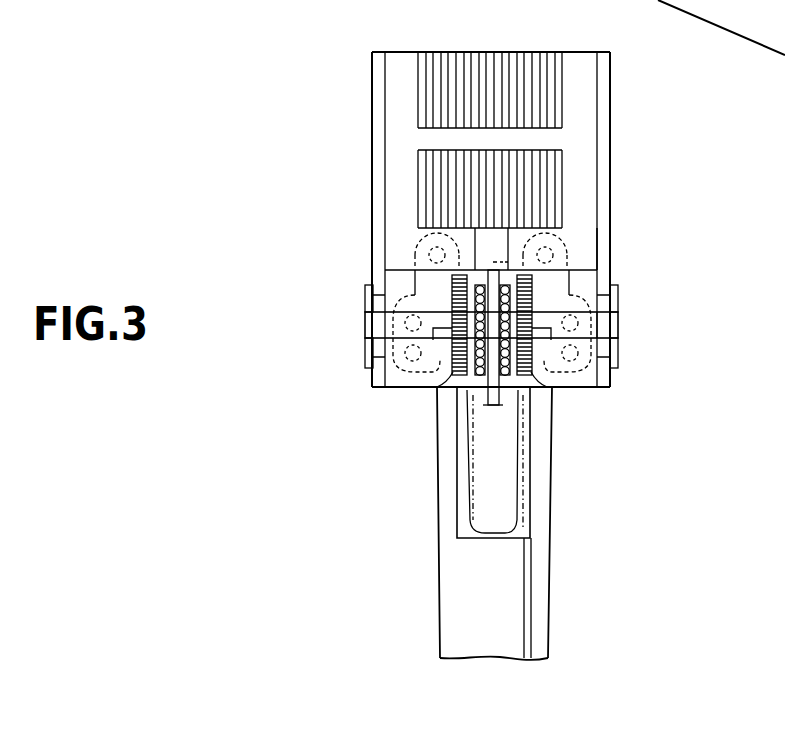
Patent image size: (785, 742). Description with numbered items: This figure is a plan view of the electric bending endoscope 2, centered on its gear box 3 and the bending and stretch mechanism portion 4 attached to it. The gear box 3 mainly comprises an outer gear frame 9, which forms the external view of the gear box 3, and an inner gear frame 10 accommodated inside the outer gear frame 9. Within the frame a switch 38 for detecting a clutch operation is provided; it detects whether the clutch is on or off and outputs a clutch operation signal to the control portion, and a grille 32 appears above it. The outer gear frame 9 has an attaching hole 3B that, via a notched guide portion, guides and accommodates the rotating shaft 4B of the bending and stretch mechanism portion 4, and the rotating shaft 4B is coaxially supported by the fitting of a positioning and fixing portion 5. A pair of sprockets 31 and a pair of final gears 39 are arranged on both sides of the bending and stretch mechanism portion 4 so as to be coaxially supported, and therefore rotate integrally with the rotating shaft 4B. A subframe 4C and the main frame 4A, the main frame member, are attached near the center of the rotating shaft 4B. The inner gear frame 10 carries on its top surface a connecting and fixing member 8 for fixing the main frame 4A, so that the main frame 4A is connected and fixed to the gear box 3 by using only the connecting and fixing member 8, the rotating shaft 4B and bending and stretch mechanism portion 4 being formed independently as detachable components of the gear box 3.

The connector assembly 2 is at (648, 126).
The gear box 3 is at (603, 317).
The attaching hole 3B is at (610, 225).
The bending and stretch mechanism portion 4 is at (540, 590).
The main frame 4A is at (532, 627).
The rotating shaft 4B is at (610, 327).
The subframe 4C is at (492, 398).
The positioning and fixing portion 5 is at (616, 348).
The connecting and fixing member 8 is at (507, 480).
The outer gear frame 9 is at (378, 107).
The inner gear frame 10 is at (392, 240).
The sprocket 31 is at (477, 388).
The upper grille 32 is at (495, 72).
The switch for detecting a clutch operation 38 is at (432, 190).
The final gear 39 is at (455, 382).